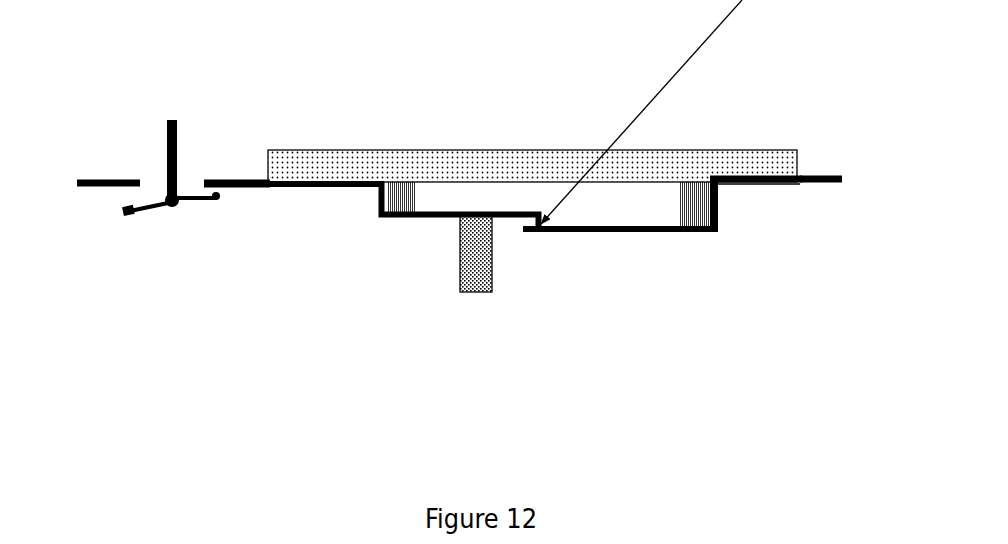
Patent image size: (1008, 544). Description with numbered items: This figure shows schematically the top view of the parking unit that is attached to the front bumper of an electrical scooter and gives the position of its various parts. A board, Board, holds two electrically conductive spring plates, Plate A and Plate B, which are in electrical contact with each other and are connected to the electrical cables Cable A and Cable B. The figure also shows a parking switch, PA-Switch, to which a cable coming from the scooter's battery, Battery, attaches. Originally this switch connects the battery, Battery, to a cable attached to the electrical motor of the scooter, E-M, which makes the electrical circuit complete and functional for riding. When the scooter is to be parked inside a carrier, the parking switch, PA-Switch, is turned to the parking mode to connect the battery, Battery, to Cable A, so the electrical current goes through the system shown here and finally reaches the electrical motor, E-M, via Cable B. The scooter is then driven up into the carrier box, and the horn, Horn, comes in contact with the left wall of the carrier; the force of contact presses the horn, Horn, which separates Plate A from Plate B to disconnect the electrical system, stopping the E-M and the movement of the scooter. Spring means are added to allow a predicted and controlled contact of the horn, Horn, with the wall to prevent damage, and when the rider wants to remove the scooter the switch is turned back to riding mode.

The board Board is at (314, 146).
The battery Battery is at (169, 117).
The electrical motor E-M is at (92, 179).
The parking switch PA-Switch is at (169, 218).
The cable A Cable A is at (235, 189).
The spring plate A Plate A is at (429, 219).
The horn Horn is at (475, 294).
The spring plate B Plate B is at (650, 234).
The cable B Cable B is at (812, 185).